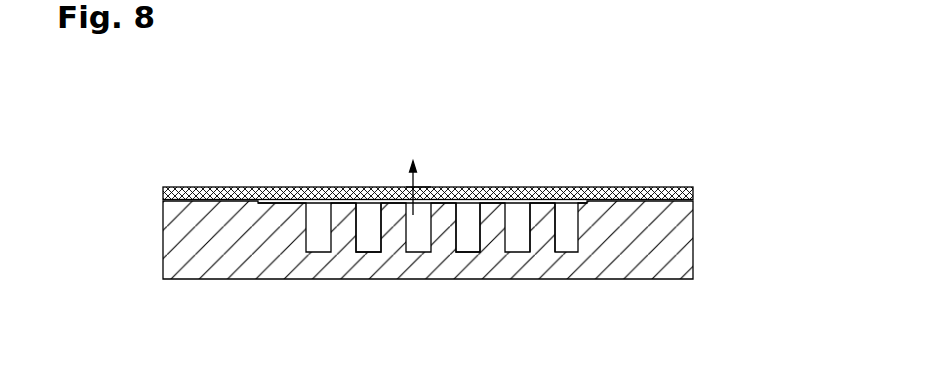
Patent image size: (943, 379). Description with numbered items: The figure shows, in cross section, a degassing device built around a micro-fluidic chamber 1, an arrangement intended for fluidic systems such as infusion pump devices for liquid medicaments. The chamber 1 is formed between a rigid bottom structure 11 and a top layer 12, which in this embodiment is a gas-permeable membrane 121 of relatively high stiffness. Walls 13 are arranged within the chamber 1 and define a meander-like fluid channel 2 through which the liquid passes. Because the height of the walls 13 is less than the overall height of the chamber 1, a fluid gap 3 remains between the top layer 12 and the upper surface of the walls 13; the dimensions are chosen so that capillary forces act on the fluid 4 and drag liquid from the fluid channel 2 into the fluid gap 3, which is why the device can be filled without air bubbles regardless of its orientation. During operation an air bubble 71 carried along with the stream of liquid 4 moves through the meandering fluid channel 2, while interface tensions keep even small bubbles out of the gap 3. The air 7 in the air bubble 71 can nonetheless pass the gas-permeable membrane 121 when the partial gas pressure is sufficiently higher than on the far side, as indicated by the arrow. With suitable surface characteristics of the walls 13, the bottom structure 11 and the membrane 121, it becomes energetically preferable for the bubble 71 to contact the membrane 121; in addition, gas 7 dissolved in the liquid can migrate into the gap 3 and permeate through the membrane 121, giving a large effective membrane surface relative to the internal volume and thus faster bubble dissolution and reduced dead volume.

The micro-fluidic chamber 1 is at (428, 199).
The fluid channel 2 is at (464, 228).
The fluid gap 3 is at (490, 202).
The fluid 4 is at (362, 225).
The air 7 is at (407, 184).
The bottom structure 11 is at (623, 233).
The top layer 12 is at (303, 190).
The gas-permeable membrane 121 is at (428, 151).
The walls 13 is at (536, 231).
The air bubble 71 is at (421, 212).